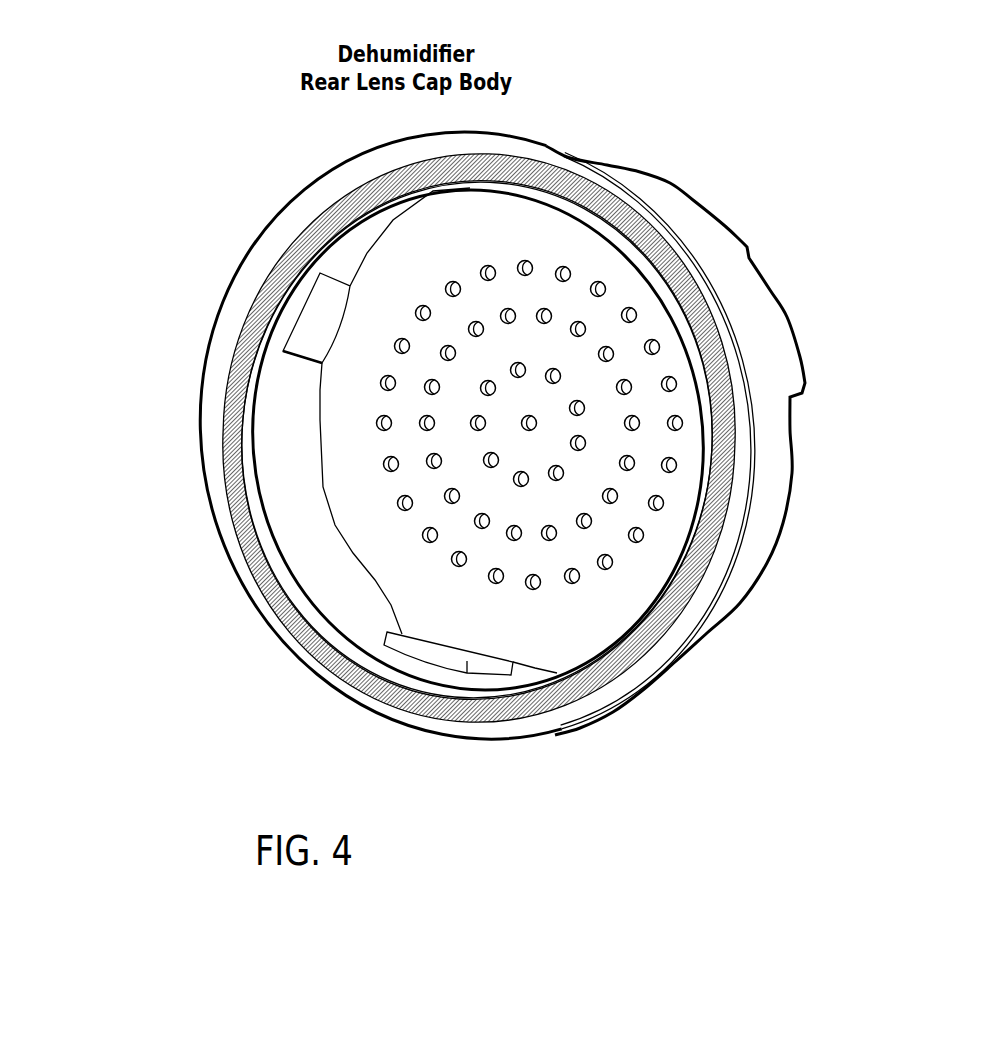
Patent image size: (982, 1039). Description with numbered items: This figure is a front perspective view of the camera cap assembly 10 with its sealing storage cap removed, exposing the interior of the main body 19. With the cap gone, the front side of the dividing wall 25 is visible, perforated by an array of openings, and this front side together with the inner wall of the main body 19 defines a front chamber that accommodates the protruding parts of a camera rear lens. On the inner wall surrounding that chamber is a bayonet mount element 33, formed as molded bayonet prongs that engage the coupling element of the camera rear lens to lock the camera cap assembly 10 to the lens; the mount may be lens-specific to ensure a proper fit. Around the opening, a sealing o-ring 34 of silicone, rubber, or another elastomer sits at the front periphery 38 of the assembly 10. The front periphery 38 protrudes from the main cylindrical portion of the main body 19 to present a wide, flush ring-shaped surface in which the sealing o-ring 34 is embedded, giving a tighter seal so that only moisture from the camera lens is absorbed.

The camera cap assembly 10 is at (671, 204).
The main body 19 is at (283, 212).
The dividing wall 25 is at (613, 598).
The bayonet mount element 33 is at (410, 630).
The sealing o-ring 34 is at (717, 387).
The front periphery 38 is at (713, 577).